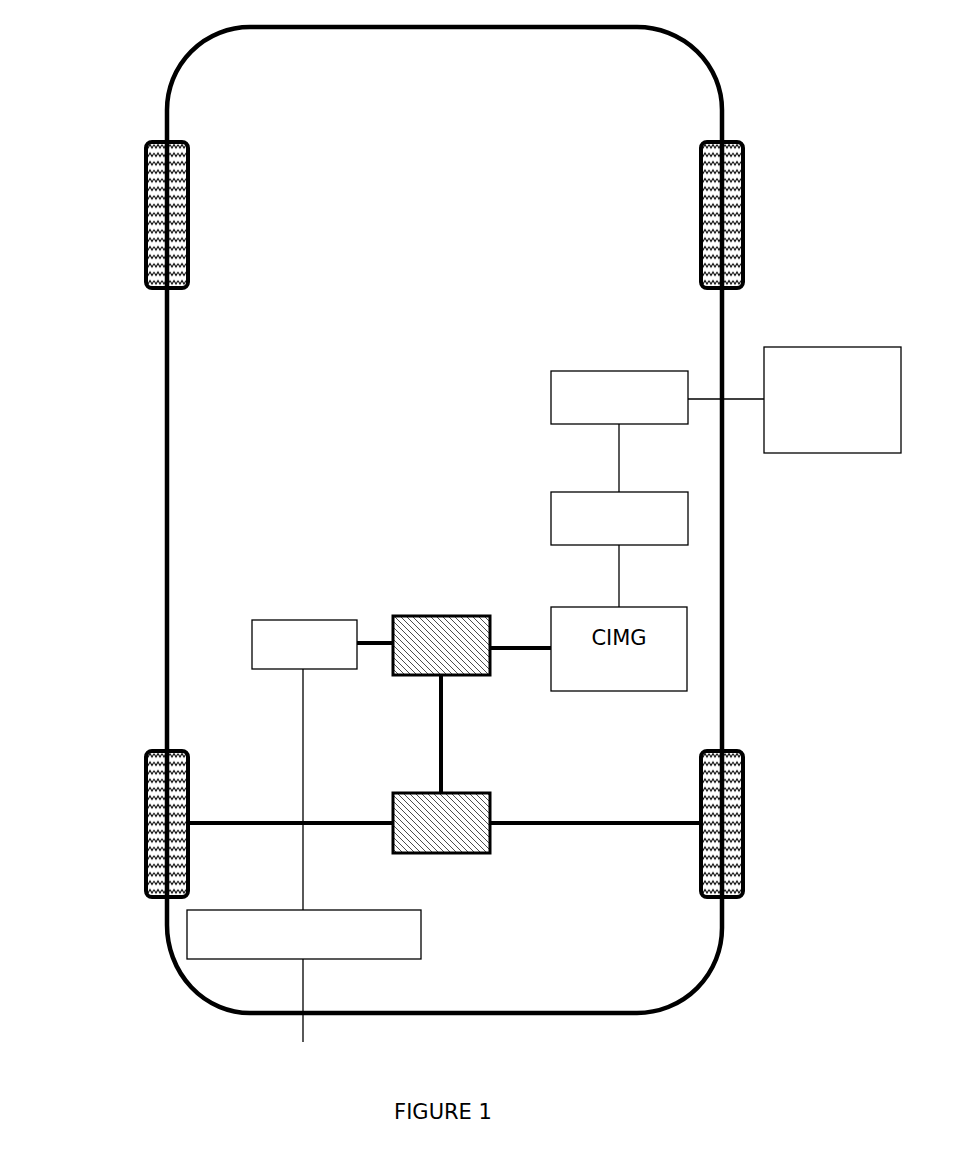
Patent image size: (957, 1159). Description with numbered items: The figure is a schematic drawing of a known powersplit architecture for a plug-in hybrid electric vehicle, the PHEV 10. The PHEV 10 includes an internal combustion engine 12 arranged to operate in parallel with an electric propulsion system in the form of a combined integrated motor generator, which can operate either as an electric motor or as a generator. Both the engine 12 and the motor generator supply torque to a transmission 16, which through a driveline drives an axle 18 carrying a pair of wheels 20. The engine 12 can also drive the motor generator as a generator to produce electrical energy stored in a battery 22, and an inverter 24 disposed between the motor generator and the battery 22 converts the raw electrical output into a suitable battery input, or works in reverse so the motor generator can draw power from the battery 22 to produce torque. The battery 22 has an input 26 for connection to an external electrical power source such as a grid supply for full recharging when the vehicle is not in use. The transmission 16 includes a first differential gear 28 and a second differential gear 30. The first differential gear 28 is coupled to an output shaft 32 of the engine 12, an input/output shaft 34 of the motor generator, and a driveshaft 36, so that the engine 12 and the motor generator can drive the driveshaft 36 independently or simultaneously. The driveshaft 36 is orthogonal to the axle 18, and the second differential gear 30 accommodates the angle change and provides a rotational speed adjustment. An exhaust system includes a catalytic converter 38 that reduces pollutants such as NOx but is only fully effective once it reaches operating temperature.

The PHEV 10 is at (93, 59).
The internal combustion engine 12 is at (252, 640).
The transmission 16 is at (592, 861).
The axle 18 is at (550, 825).
The wheels 20 is at (143, 837).
The battery 22 is at (688, 378).
The inverter 24 is at (688, 517).
The input 26 is at (862, 453).
The first differential gear 28 is at (396, 616).
The second differential gear 30 is at (490, 793).
The output shaft 32 is at (380, 652).
The input/output shaft 34 is at (525, 652).
The driveshaft 36 is at (439, 753).
The catalytic converter 38 is at (233, 958).